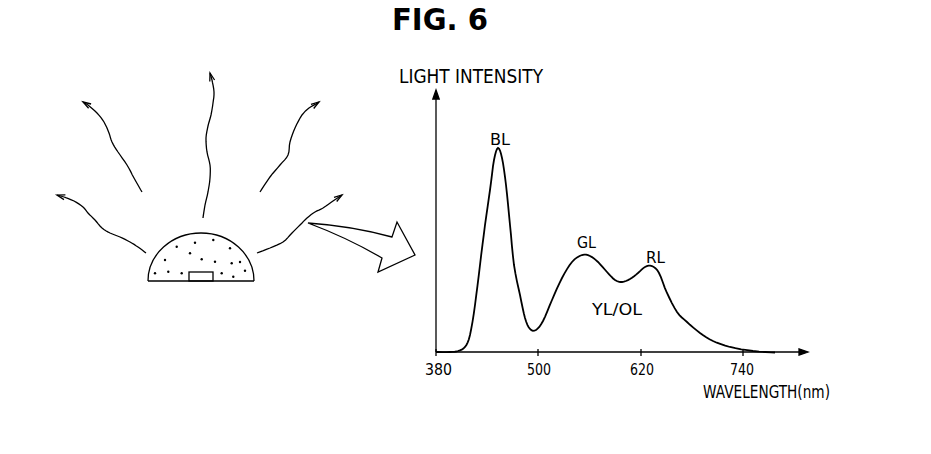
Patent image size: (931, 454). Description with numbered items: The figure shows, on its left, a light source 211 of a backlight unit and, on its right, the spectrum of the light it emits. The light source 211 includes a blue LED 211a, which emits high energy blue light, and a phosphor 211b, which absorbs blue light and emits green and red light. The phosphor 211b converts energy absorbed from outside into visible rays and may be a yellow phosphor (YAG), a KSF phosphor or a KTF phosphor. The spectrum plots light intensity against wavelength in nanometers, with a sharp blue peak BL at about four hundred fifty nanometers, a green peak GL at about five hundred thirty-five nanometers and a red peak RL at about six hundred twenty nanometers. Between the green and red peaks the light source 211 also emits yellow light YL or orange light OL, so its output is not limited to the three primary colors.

The light source 211 is at (173, 262).
The blue LED 211a is at (200, 277).
The phosphor 211b is at (183, 242).